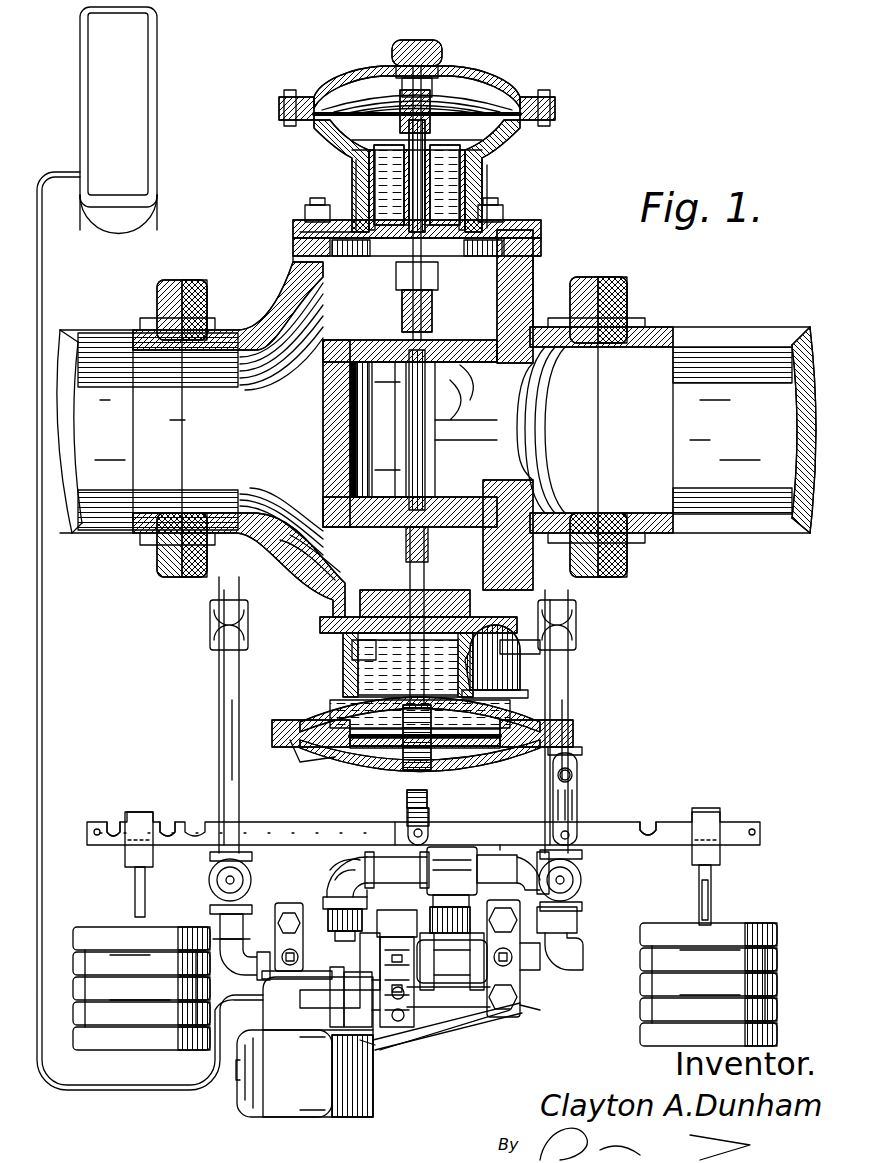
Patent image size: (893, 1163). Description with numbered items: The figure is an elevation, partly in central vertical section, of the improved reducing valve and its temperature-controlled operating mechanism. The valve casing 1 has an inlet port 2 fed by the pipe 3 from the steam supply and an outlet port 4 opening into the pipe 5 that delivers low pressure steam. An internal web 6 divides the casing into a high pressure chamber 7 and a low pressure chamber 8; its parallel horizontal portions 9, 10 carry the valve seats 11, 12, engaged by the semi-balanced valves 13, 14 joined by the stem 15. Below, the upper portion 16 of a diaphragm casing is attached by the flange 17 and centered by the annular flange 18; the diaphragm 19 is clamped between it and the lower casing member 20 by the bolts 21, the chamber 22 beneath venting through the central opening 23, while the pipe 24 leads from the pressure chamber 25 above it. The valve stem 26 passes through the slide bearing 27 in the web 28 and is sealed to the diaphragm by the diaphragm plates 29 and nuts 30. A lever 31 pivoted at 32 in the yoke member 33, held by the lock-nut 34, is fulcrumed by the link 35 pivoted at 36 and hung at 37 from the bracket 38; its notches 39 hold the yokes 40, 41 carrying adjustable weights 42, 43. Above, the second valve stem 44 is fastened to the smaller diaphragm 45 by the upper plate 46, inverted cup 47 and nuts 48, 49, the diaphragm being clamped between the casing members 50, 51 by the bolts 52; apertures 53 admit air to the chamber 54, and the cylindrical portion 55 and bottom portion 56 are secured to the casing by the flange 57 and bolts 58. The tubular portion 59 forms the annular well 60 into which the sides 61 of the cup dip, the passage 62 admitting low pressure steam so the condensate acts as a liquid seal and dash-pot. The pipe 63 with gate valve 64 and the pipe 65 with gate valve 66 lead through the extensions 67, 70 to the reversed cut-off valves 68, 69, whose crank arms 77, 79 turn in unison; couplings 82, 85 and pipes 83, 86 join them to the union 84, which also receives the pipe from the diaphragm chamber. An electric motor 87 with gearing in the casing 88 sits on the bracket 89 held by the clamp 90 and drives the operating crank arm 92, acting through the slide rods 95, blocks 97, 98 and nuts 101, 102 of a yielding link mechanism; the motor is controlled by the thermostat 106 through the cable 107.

The valve casing 1 is at (533, 280).
The inlet port 2 is at (545, 328).
The pipe 3 is at (680, 342).
The outlet port 4 is at (210, 325).
The pipe 5 is at (78, 345).
The internal web 6 is at (322, 420).
The high pressure chamber 7 is at (520, 450).
The low pressure chamber 8 is at (333, 436).
The horizontal portion of web 9 is at (526, 430).
The horizontal portion of web 10 is at (500, 496).
The valve seat 11 is at (352, 382).
The valve seat 12 is at (381, 429).
The semi-balanced valve 13 is at (345, 345).
The semi-balanced valve 14 is at (382, 498).
The stem 15 is at (455, 395).
The upper portion of diaphragm casing 16 is at (338, 705).
The outwardly projecting flange 17 is at (318, 625).
The annular flange 18 is at (340, 642).
The diaphragm 19 is at (335, 742).
The lower diaphragm casing member 20 is at (345, 750).
The bolts 21 is at (300, 740).
The chamber 22 is at (358, 754).
The central opening 23 is at (410, 762).
The conduit or pipe 24 is at (575, 752).
The pressure chamber 25 is at (505, 712).
The valve stem 26 is at (408, 532).
The slide bearing 27 is at (432, 590).
The web 28 is at (352, 654).
The diaphragm plates 29 is at (348, 762).
The positioning nuts 30 is at (406, 712).
The lever 31 is at (275, 836).
The pivot 32 is at (423, 834).
The yoke member 33 is at (401, 828).
The lock-nut 34 is at (405, 815).
The fulcrum link 35 is at (578, 797).
The lower end pivot 36 is at (560, 836).
The pivot 37 is at (600, 764).
The bracket 38 is at (572, 773).
The notches 39 is at (160, 822).
The supporting yoke 40 is at (122, 860).
The supporting yoke 41 is at (722, 850).
The adjustable weight 42 is at (88, 930).
The adjustable weight 43 is at (775, 935).
The second valve stem 44 is at (428, 287).
The second flexible diaphragm 45 is at (478, 135).
The upper diaphragm plate 46 is at (432, 128).
The inverted cup 47 is at (485, 142).
The nut 48 is at (424, 110).
The nut 49 is at (366, 176).
The upper casing member 50 is at (452, 100).
The lower casing member 51 is at (522, 114).
The bolts 52 is at (284, 97).
The apertures 53 is at (400, 70).
The chamber 54 is at (354, 78).
The cylindrical portion 55 is at (372, 180).
The bottom portion 56 is at (396, 270).
The outwardly extending flange 57 is at (543, 234).
The bolts 58 is at (303, 214).
The tubular portion 59 is at (352, 190).
The annular well 60 is at (486, 166).
The sides of inverted cup 61 is at (478, 176).
The annular steam passage 62 is at (350, 205).
The pipe 63 is at (216, 702).
The gate valve 64 is at (208, 878).
The pipe 65 is at (572, 667).
The gate valve 66 is at (582, 880).
The right-angled extension 67 is at (243, 945).
The control or cut-off valve 68 is at (330, 905).
The control valve 69 is at (490, 1000).
The extension of pipe 70 is at (548, 972).
The crank arm 77 is at (452, 961).
The crank arm 79 is at (328, 977).
The coupling 82 is at (475, 958).
The pipe 83 is at (578, 920).
The union 84 is at (475, 857).
The coupling 85 is at (360, 866).
The pipe 86 is at (235, 835).
The electric motor 87 is at (300, 1120).
The casing 88 is at (360, 1120).
The bracket 89 is at (470, 1010).
The clamp 90 is at (276, 905).
The operating crank arm 92 is at (318, 1047).
The slide rod 95 is at (388, 955).
The block 97 is at (402, 1020).
The slide-block 98 is at (378, 997).
The nut 101 is at (420, 1008).
The nut 102 is at (398, 1000).
The thermostat 106 is at (158, 146).
The three-wire cable 107 is at (43, 270).